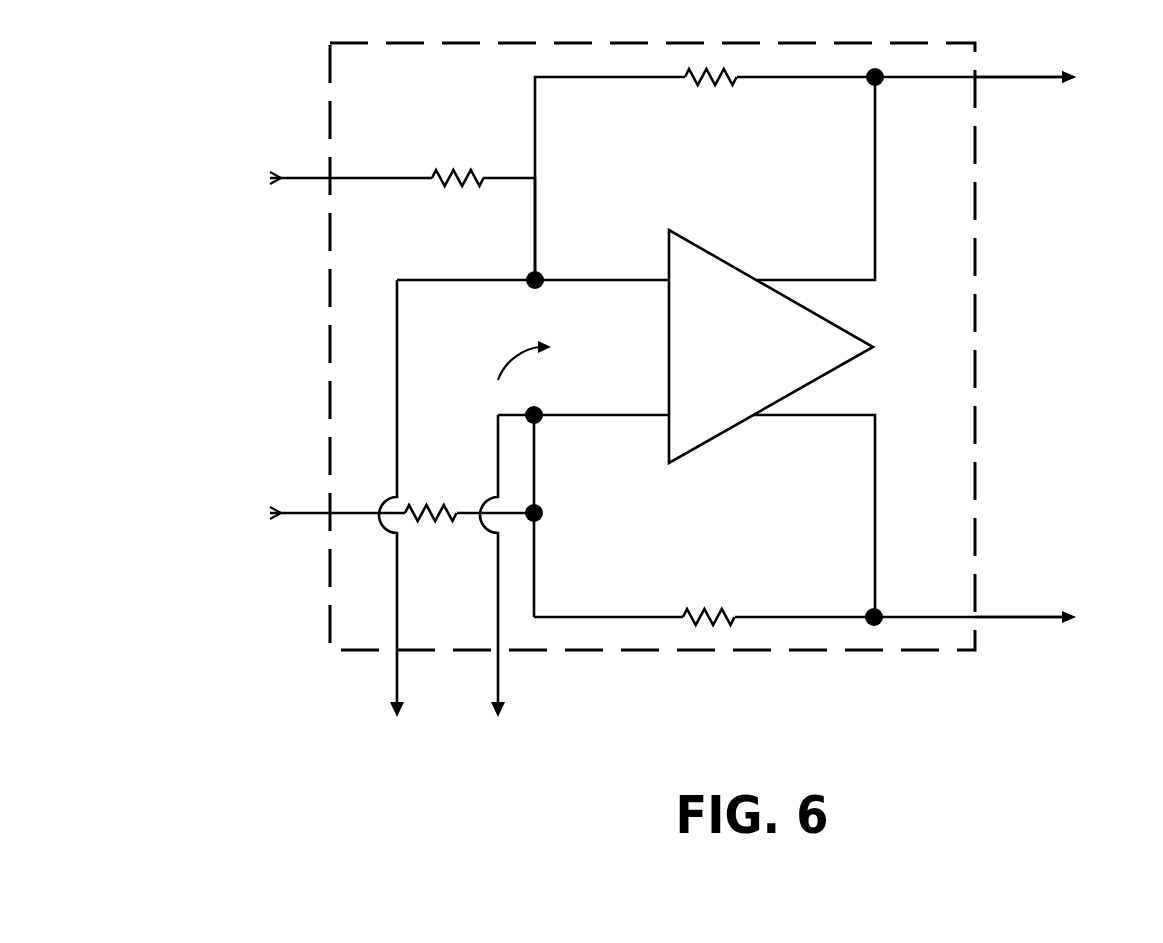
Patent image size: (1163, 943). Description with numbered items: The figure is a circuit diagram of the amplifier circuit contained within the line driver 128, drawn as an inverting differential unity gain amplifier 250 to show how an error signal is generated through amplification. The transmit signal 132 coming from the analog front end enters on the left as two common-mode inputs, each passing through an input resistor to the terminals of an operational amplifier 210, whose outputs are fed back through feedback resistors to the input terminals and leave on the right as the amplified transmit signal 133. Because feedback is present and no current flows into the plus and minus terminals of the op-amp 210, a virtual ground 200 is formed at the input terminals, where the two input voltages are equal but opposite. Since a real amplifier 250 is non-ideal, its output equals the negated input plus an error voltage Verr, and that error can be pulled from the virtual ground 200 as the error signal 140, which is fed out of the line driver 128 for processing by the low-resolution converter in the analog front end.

The line driver 128 is at (925, 676).
The transmit signal 132 is at (278, 222).
The amplified transmit signal 133 is at (1041, 568).
The error signal 140 is at (424, 685).
The virtual ground 200 is at (571, 464).
The operational amplifier 210 is at (750, 262).
The inverting differential unity gain amplifier 250 is at (508, 138).